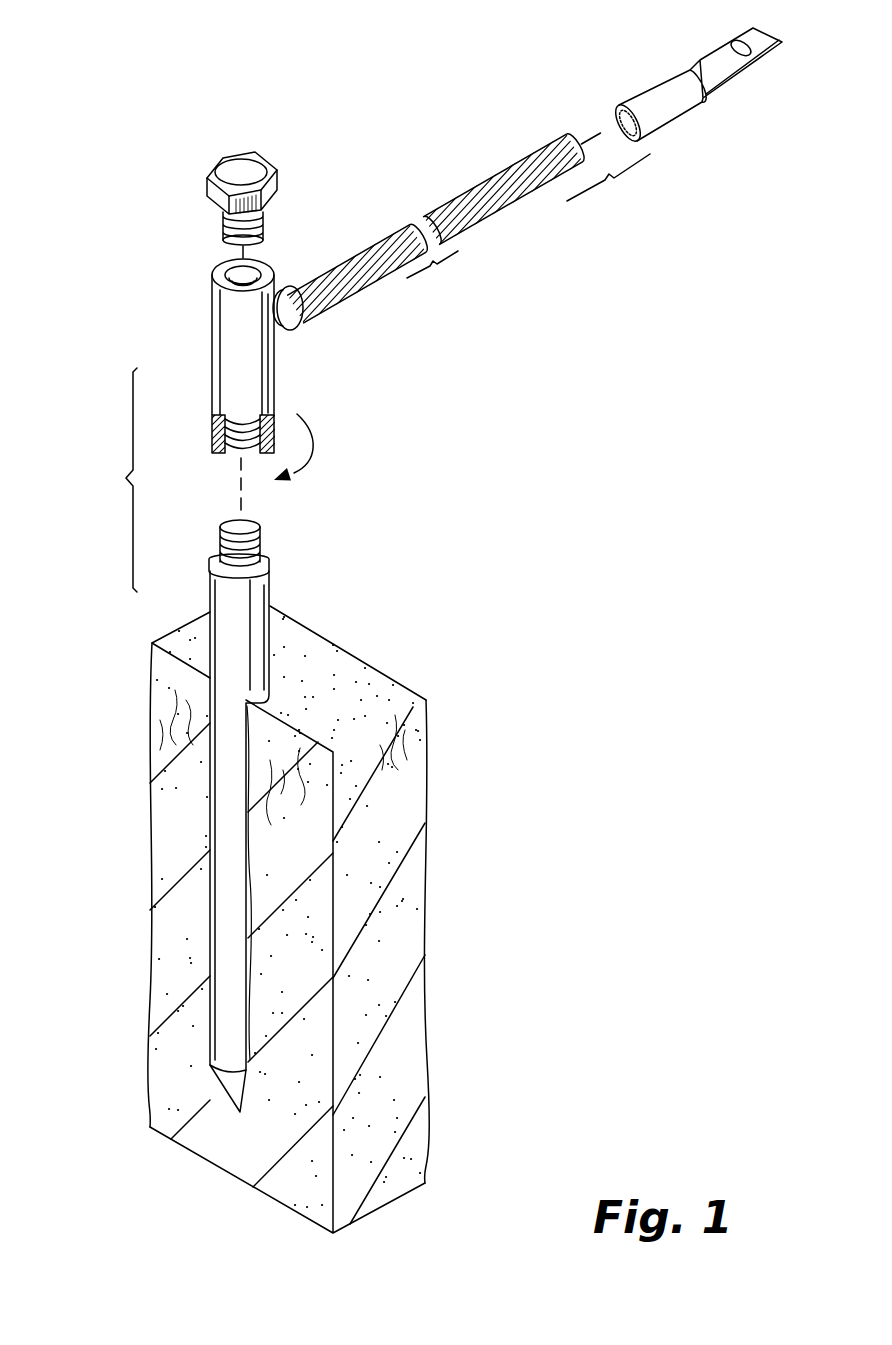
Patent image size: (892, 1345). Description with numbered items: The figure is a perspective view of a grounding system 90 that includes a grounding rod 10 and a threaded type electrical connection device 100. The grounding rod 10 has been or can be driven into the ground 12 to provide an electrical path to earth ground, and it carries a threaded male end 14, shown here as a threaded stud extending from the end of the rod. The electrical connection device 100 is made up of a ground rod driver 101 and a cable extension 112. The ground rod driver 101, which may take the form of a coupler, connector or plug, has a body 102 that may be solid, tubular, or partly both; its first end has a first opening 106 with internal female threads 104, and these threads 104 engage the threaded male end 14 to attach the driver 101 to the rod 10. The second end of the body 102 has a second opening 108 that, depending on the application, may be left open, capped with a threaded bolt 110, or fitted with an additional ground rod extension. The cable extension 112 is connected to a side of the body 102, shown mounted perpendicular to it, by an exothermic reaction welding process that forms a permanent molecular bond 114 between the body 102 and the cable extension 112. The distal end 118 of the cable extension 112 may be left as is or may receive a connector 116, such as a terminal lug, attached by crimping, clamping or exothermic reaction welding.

The grounding rod 10 is at (225, 602).
The ground 12 is at (370, 687).
The threaded male end 14 is at (260, 540).
The grounding system 90 is at (107, 473).
The electrical connection device 100 is at (312, 163).
The ground rod driver 101 is at (204, 367).
The body 102 is at (222, 350).
The internal female threads 104 is at (228, 425).
The first opening 106 is at (253, 460).
The second opening 108 is at (257, 266).
The threaded bolt 110 is at (207, 182).
The cable extension 112 is at (442, 286).
The permanent molecular bond 114 is at (294, 326).
The connector 116 is at (652, 88).
The distal end 118 is at (557, 145).